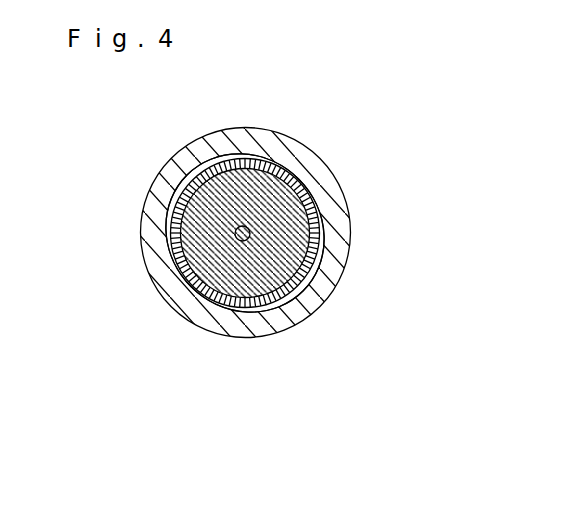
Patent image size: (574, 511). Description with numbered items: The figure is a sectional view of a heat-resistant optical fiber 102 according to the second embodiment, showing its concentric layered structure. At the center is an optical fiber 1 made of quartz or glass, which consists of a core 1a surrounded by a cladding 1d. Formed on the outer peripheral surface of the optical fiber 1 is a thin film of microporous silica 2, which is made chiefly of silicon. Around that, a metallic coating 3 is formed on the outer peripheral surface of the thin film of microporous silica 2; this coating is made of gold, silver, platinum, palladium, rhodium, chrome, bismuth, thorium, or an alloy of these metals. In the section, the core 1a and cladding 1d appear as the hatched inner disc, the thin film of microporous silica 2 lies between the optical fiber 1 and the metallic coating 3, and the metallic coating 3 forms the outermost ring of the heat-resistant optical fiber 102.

The heat-resistant optical fiber 102 is at (264, 98).
The metallic coating 3 is at (168, 173).
The thin film of microporous silica 2 is at (175, 270).
The optical fiber 1 is at (274, 291).
The core 1a is at (245, 242).
The cladding 1d is at (217, 267).